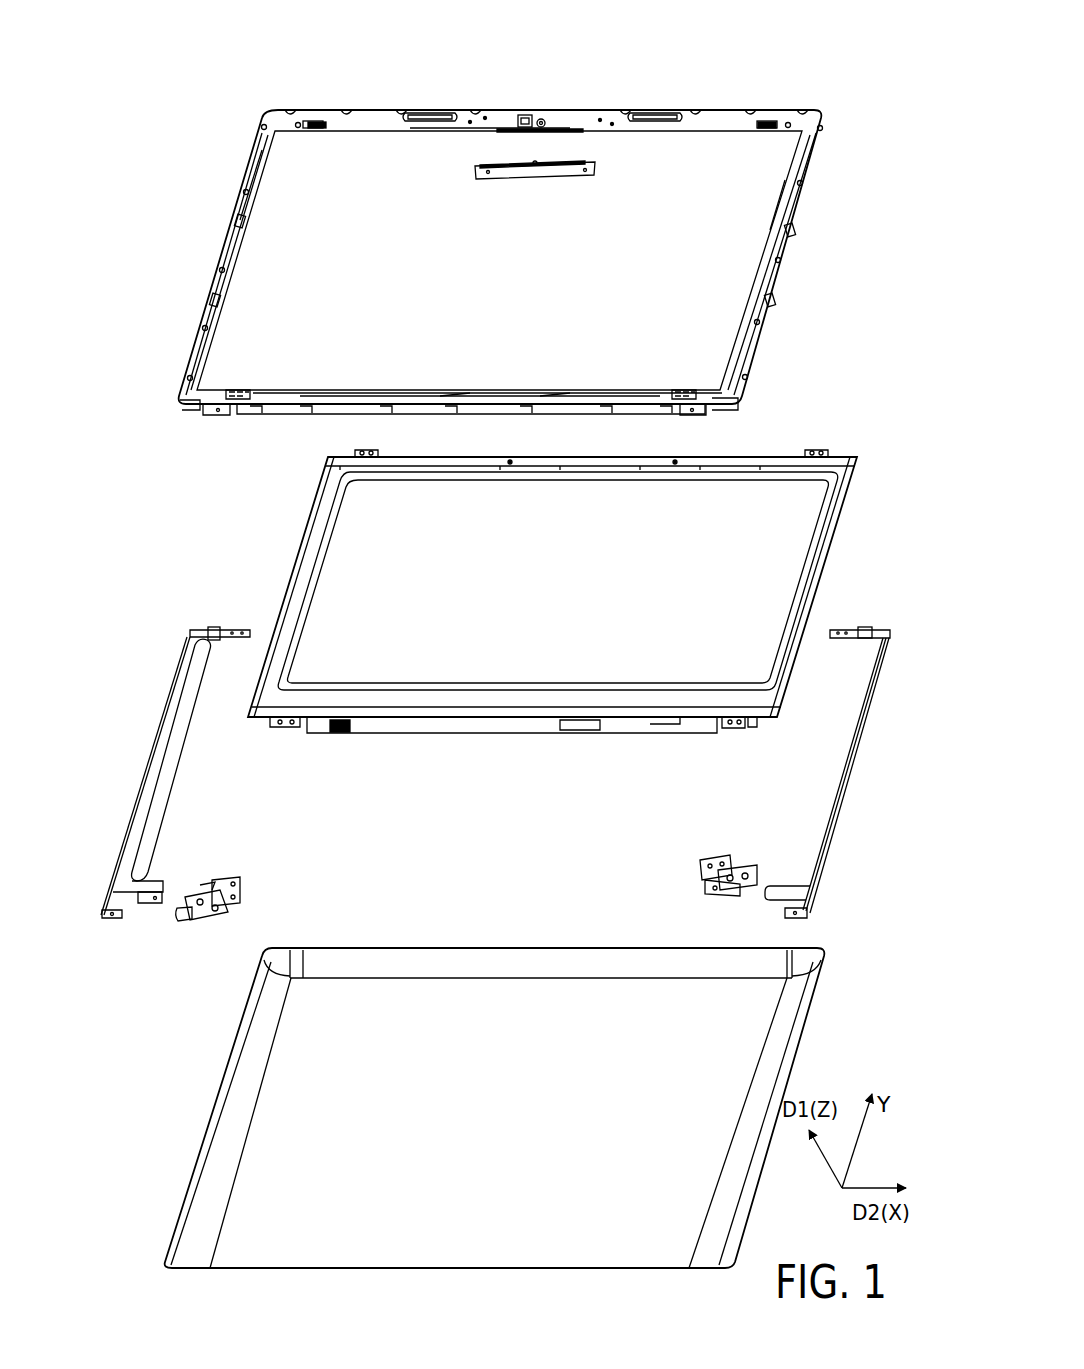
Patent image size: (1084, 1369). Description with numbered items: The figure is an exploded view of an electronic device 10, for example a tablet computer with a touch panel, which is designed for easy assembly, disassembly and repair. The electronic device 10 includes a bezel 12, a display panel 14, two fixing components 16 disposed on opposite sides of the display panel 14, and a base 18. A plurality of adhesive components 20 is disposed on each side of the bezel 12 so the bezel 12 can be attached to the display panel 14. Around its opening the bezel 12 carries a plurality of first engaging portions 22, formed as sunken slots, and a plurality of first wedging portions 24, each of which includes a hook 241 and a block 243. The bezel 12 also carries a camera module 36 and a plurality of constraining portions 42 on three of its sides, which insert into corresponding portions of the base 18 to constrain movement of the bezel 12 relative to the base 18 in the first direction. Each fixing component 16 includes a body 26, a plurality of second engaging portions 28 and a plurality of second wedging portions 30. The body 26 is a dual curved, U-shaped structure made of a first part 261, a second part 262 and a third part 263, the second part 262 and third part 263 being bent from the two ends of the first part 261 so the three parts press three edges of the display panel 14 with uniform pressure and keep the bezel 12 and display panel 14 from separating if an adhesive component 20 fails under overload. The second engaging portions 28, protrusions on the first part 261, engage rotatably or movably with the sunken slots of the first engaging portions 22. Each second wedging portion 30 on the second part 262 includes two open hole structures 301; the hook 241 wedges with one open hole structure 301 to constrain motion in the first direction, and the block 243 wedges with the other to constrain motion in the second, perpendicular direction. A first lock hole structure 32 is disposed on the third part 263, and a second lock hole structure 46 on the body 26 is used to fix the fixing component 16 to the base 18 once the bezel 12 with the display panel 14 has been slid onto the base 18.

The electronic device 10 is at (832, 98).
The bezel 12 is at (373, 126).
The display panel 14 is at (491, 666).
The fixing component 16 is at (504, 770).
The base 18 is at (438, 971).
The adhesive component 20 is at (405, 134).
The first engaging portion 22 is at (238, 222).
The first wedging portion 24 is at (541, 74).
The body 26 is at (505, 776).
The second engaging portion 28 is at (159, 716).
The second wedging portion 30 is at (531, 635).
The first lock hole structure 32 is at (473, 892).
The camera module 36 is at (549, 177).
The constraining portion 42 is at (288, 113).
The second lock hole structure 46 is at (131, 915).
The hook 241 is at (320, 124).
The block 243 is at (345, 64).
The first part 261 is at (181, 759).
The second part 262 is at (250, 612).
The third part 263 is at (158, 940).
The open hole structure 301 is at (249, 628).